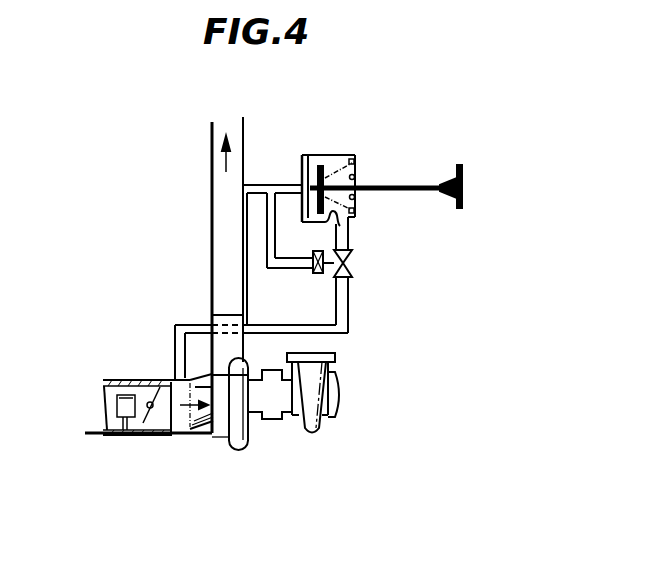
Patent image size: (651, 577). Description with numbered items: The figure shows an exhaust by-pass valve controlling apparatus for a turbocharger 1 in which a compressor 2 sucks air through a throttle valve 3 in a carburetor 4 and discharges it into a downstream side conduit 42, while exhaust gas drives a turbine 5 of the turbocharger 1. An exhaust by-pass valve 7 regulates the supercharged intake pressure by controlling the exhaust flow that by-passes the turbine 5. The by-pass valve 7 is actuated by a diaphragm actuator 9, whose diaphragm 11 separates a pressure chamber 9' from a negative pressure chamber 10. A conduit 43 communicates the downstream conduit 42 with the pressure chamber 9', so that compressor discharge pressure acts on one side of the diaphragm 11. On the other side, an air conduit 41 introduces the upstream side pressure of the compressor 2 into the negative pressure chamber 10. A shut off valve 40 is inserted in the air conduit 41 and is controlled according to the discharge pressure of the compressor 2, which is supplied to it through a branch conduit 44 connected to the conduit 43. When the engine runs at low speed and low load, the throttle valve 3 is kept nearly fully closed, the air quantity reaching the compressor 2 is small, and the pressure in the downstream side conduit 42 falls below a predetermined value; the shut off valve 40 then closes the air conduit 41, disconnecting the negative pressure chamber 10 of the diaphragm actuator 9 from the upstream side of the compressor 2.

The turbocharger 1 is at (273, 428).
The compressor 2 is at (234, 449).
The throttle valve 3 is at (145, 425).
The carburetor 4 is at (143, 388).
The turbine 5 is at (318, 436).
The exhaust by-pass valve 7 is at (464, 185).
The diaphragm actuator 9 is at (329, 160).
The pressure chamber 9' is at (325, 155).
The negative pressure chamber 10 is at (350, 227).
The diaphragm 11 is at (340, 152).
The shut off valve 40 is at (352, 262).
The air conduit 41 is at (350, 328).
The downstream side conduit 42 is at (212, 200).
The conduit 43 is at (272, 185).
The branch conduit 44 is at (288, 268).